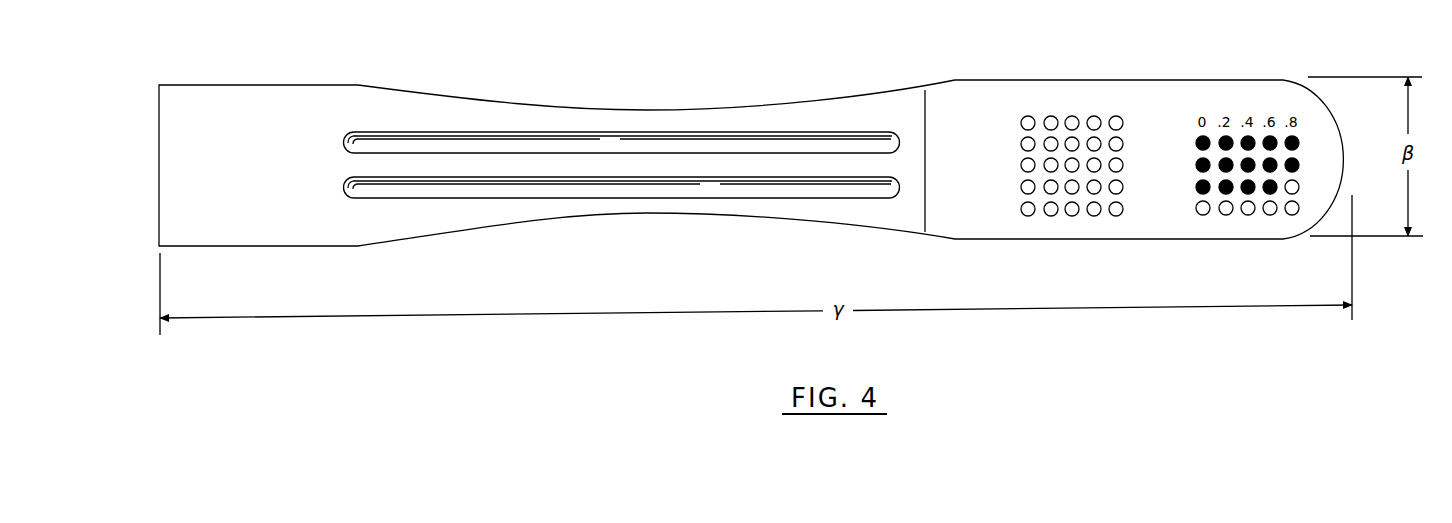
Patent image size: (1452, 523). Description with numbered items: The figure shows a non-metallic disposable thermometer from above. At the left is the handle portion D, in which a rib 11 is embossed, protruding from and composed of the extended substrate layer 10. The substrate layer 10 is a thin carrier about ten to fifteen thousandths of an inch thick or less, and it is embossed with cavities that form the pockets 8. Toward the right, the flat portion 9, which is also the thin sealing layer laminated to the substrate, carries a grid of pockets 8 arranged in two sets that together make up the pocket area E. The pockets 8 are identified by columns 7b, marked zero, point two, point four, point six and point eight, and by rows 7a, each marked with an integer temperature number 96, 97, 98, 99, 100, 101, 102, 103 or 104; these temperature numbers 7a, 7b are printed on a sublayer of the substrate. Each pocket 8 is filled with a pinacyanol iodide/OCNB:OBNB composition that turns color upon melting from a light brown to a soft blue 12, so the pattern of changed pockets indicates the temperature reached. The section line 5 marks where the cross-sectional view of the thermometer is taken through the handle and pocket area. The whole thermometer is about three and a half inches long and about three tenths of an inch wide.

The section line 5- 5 is at (213, 195).
The rows 7a is at (980, 125).
The columns 7b is at (1107, 87).
The pockets 8 is at (1072, 217).
The flat portion 9 is at (960, 97).
The substrate layer 10 is at (848, 108).
The rib 11 is at (583, 142).
The soft blue color 12 is at (1300, 165).
The row temperature marking 96 is at (1233, 143).
The row temperature marking 97 is at (1233, 165).
The row temperature marking 98 is at (1233, 187).
The row temperature marking 99 is at (1233, 208).
The row temperature marking 100 is at (1072, 123).
The row temperature marking 101 is at (1072, 144).
The row temperature marking 102 is at (1072, 165).
The row temperature marking 103 is at (1072, 187).
The row temperature marking 104 is at (1072, 237).
The handle portion D is at (675, 225).
The pocket area E is at (1205, 247).